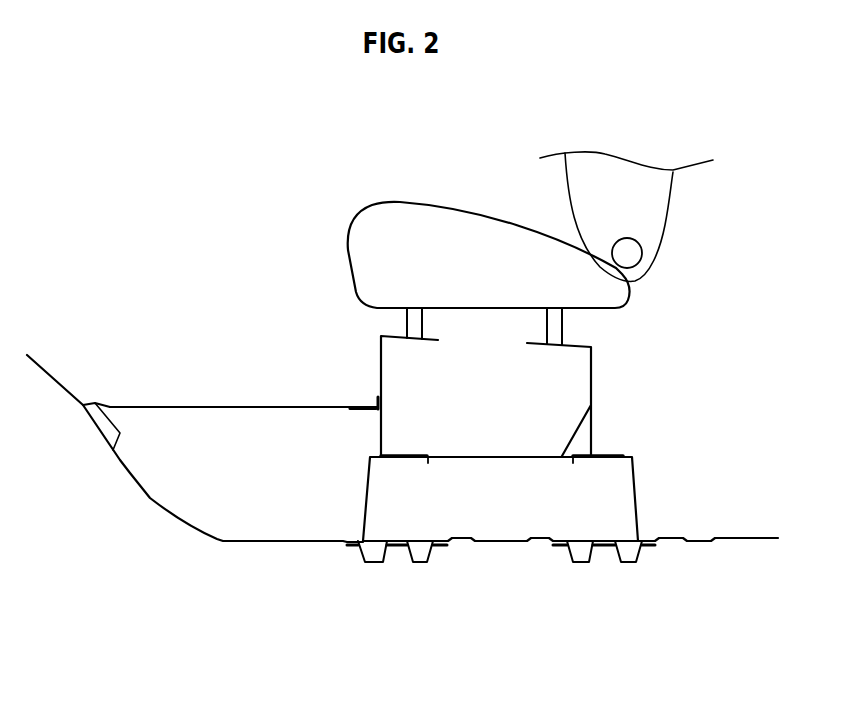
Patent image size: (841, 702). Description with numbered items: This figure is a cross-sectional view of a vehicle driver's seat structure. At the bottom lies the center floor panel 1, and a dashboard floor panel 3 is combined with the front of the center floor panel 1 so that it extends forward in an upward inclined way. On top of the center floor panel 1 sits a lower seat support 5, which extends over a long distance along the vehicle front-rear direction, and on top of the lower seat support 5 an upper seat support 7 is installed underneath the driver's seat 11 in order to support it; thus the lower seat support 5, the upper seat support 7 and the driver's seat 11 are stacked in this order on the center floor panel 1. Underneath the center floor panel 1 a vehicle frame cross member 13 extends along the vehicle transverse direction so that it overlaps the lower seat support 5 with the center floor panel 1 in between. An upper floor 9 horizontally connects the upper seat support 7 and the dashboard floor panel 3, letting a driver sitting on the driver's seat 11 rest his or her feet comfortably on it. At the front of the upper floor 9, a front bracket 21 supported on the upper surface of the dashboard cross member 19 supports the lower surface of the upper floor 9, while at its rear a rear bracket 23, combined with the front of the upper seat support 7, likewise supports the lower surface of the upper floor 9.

The center floor panel 1 is at (757, 535).
The dashboard floor panel 3 is at (56, 372).
The lower seat support 5 is at (633, 482).
The upper seat support 7 is at (592, 379).
The upper floor 9 is at (228, 406).
The driver's seat 11 is at (398, 202).
The vehicle frame cross member 13 is at (443, 562).
The dashboard cross member 19 is at (100, 436).
The front bracket 21 is at (111, 406).
The rear bracket 23 is at (363, 410).